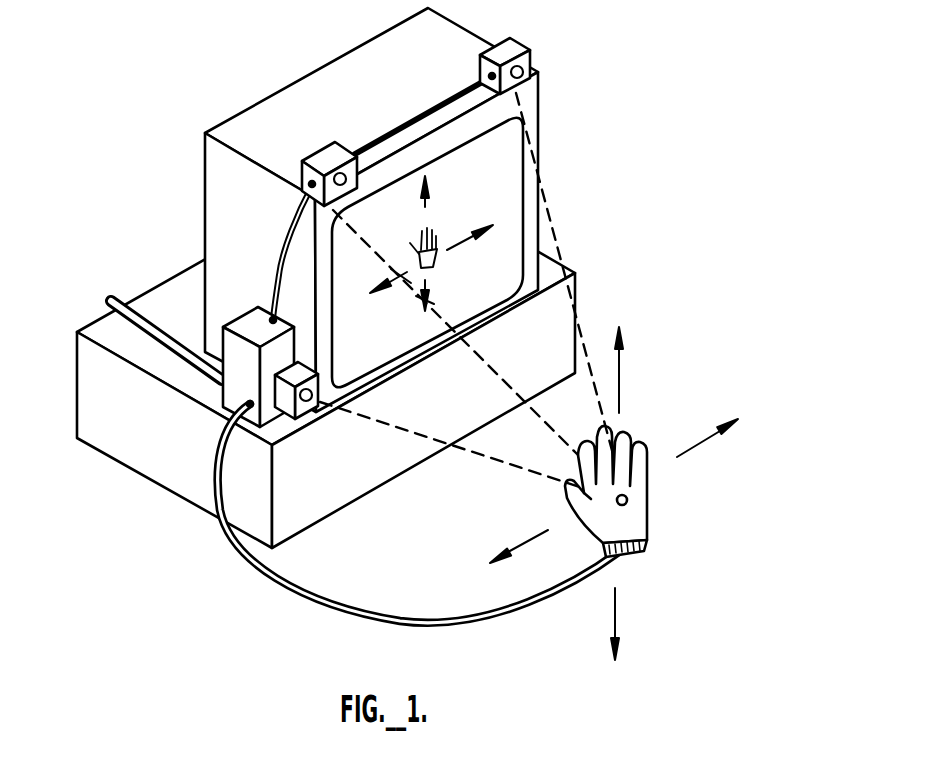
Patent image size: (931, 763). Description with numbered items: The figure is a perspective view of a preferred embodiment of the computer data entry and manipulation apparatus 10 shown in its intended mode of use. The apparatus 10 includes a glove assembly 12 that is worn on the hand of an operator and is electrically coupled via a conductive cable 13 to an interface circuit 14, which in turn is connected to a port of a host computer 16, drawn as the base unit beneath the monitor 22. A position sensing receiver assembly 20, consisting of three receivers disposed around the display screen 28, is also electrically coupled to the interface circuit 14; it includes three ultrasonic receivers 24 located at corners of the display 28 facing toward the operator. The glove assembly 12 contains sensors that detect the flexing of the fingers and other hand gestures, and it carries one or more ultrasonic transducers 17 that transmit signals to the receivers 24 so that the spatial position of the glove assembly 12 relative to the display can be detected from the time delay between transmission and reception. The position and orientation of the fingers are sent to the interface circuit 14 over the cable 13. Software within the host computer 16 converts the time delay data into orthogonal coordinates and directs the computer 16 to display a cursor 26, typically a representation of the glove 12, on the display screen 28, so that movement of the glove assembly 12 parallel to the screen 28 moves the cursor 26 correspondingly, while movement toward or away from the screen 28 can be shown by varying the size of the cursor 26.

The computer data entry and manipulation apparatus 10 is at (114, 170).
The glove assembly 12 is at (648, 492).
The cable 13 is at (372, 628).
The interface circuit 14 is at (243, 320).
The host computer 16 is at (568, 262).
The ultrasonic transducer 17 is at (628, 504).
The position sensing receiver assembly 20 is at (503, 40).
The monitor 22 is at (540, 137).
The ultrasonic receivers 24 is at (524, 66).
The cursor 26 is at (436, 262).
The display screen 28 is at (524, 222).